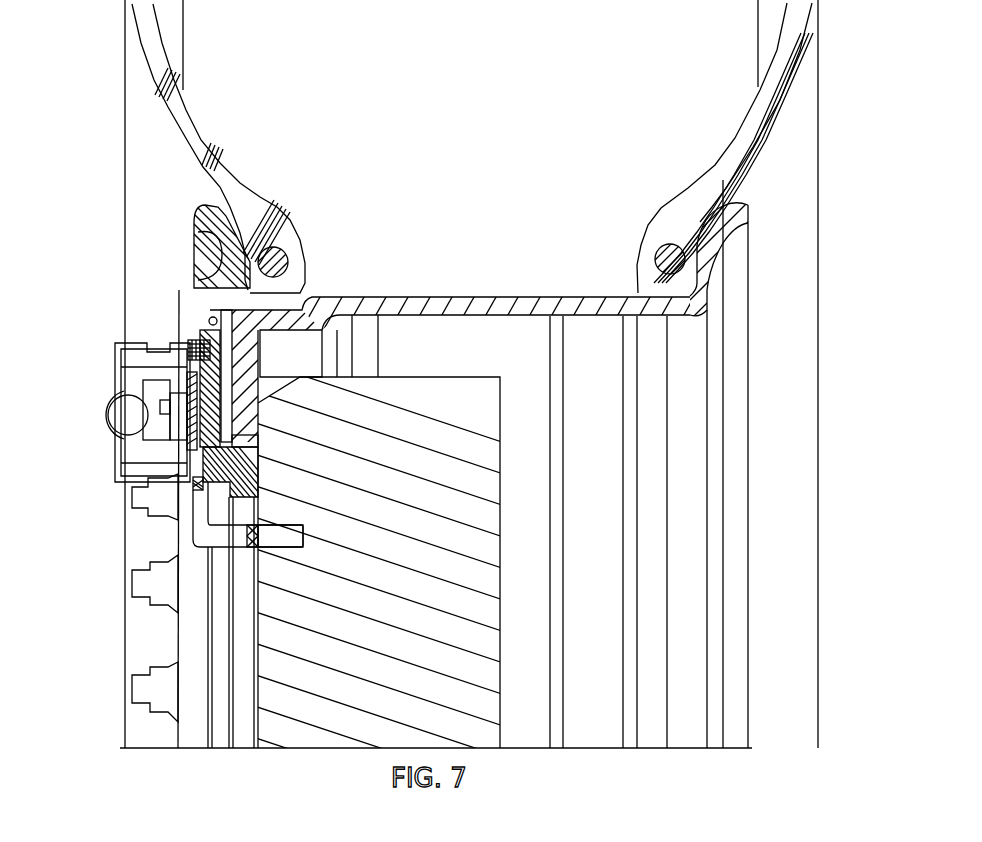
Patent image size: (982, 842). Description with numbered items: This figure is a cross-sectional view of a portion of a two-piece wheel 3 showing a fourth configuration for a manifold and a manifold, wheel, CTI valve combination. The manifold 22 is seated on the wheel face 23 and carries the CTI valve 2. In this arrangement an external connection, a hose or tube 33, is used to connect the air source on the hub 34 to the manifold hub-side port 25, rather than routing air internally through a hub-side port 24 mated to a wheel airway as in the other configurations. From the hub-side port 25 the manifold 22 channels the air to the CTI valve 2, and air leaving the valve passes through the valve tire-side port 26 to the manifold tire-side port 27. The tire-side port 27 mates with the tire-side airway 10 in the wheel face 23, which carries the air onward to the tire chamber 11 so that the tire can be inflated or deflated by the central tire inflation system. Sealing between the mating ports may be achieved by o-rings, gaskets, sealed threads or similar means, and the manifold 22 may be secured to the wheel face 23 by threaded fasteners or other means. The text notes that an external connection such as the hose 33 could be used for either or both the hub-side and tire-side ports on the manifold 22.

The CTI valve 2 is at (128, 395).
The wheel 3 is at (190, 221).
The tire-side airway 10 is at (480, 500).
The tire chamber 11 is at (447, 148).
The manifold 22 is at (146, 459).
The wheel face 23 is at (138, 291).
The hub-side port 24 is at (138, 562).
The valve hub-side port 25 is at (200, 460).
The valve tire-side port 26 is at (129, 354).
The manifold tire-side port 27 is at (263, 378).
The hose or tube 33 is at (194, 580).
The hub 34 is at (242, 598).